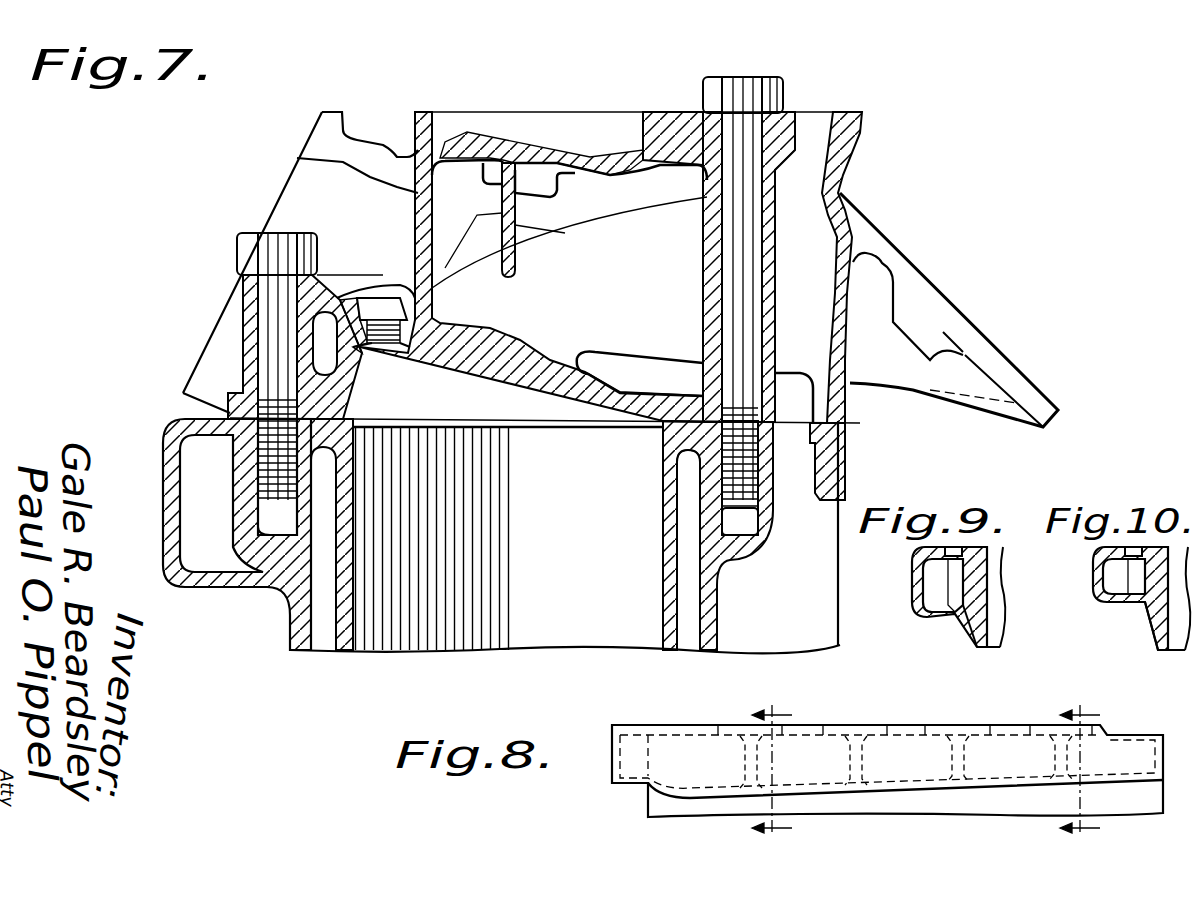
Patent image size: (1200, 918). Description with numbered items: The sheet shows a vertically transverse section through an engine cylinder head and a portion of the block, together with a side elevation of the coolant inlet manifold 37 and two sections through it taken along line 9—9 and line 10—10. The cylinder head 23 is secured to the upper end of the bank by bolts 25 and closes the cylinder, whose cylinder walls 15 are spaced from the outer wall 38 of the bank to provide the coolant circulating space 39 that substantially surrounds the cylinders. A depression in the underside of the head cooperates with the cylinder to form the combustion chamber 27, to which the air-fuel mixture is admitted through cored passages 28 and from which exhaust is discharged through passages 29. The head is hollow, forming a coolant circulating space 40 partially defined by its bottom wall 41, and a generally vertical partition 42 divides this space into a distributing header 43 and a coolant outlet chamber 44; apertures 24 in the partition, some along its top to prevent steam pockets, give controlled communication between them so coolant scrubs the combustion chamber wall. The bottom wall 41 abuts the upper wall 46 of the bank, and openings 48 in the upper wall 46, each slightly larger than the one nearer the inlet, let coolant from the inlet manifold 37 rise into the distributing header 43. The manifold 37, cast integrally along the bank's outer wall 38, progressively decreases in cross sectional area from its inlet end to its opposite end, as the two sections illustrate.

In FIG. 7, the cylinder walls 15 is at (670, 573).
In FIG. 7, the cylinder head 23 is at (855, 137).
In FIG. 7, the apertures 24 is at (493, 300).
In FIG. 7, the bolts 25 is at (275, 240).
In FIG. 7, the combustion chamber 27 is at (443, 397).
In FIG. 7, the cored passages 28 is at (654, 253).
In FIG. 7, the passages 29 is at (323, 183).
In FIG. 7, the coolant inlet manifold 37 is at (183, 463).
In FIG. 8, the coolant inlet manifold 37 is at (933, 706).
In FIG. 9, the coolant inlet manifold 37 is at (930, 583).
In FIG. 10, the coolant inlet manifold 37 is at (1112, 578).
In FIG. 7, the outer wall 38 is at (717, 607).
In FIG. 8, the outer wall 38 is at (1000, 805).
In FIG. 9, the outer wall 38 is at (975, 647).
In FIG. 10, the outer wall 38 is at (1158, 648).
In FIG. 7, the coolant circulating space 39 is at (687, 627).
In FIG. 7, the coolant circulating space 40 is at (553, 270).
In FIG. 7, the bottom wall 41 is at (350, 412).
In FIG. 7, the partition 42 is at (519, 262).
In FIG. 7, the distributing header 43 is at (462, 183).
In FIG. 7, the coolant outlet chamber 44 is at (593, 185).
In FIG. 7, the upper wall 46 is at (340, 402).
In FIG. 9, the openings 48 is at (955, 552).
In FIG. 10, the openings 48 is at (1135, 552).
In FIG. 8, the line 9— 9 is at (781, 772).
In FIG. 8, the line 10— 10 is at (1094, 772).